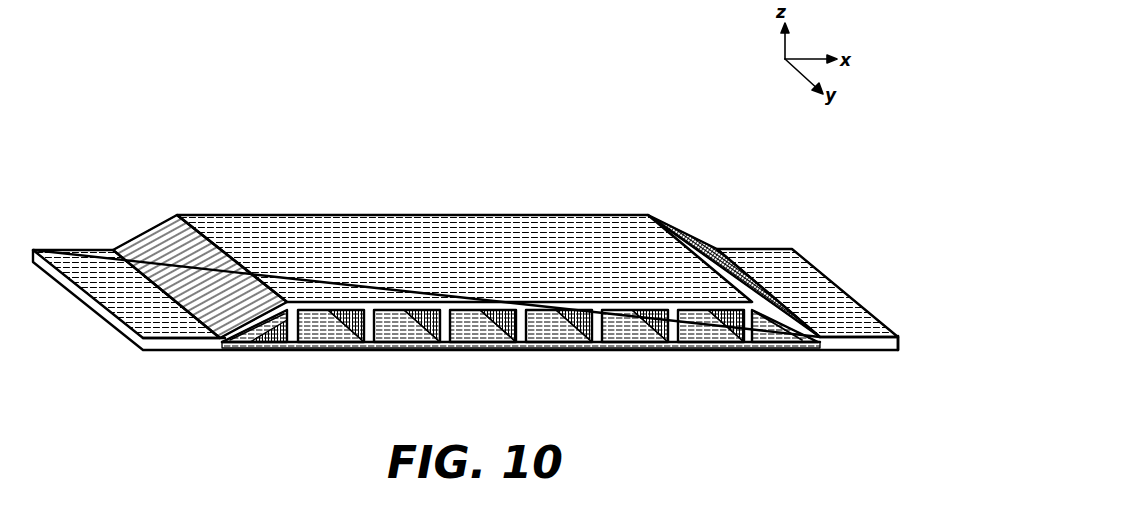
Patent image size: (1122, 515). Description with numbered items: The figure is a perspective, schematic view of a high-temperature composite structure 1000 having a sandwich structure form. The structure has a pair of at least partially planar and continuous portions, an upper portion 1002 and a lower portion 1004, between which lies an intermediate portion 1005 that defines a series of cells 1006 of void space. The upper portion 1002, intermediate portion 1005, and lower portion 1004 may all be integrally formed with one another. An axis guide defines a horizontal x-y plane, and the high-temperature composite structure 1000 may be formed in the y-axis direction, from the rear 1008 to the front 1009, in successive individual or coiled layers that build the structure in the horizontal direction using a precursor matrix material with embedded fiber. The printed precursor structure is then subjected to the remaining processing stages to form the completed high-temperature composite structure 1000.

The high-temperature composite structure 1000 is at (336, 190).
The upper portion 1002 is at (585, 245).
The lower portion 1004 is at (493, 350).
The intermediate portion 1005 is at (250, 309).
The cells 1006 is at (327, 330).
The rear 1008 is at (800, 248).
The front 1009 is at (903, 341).